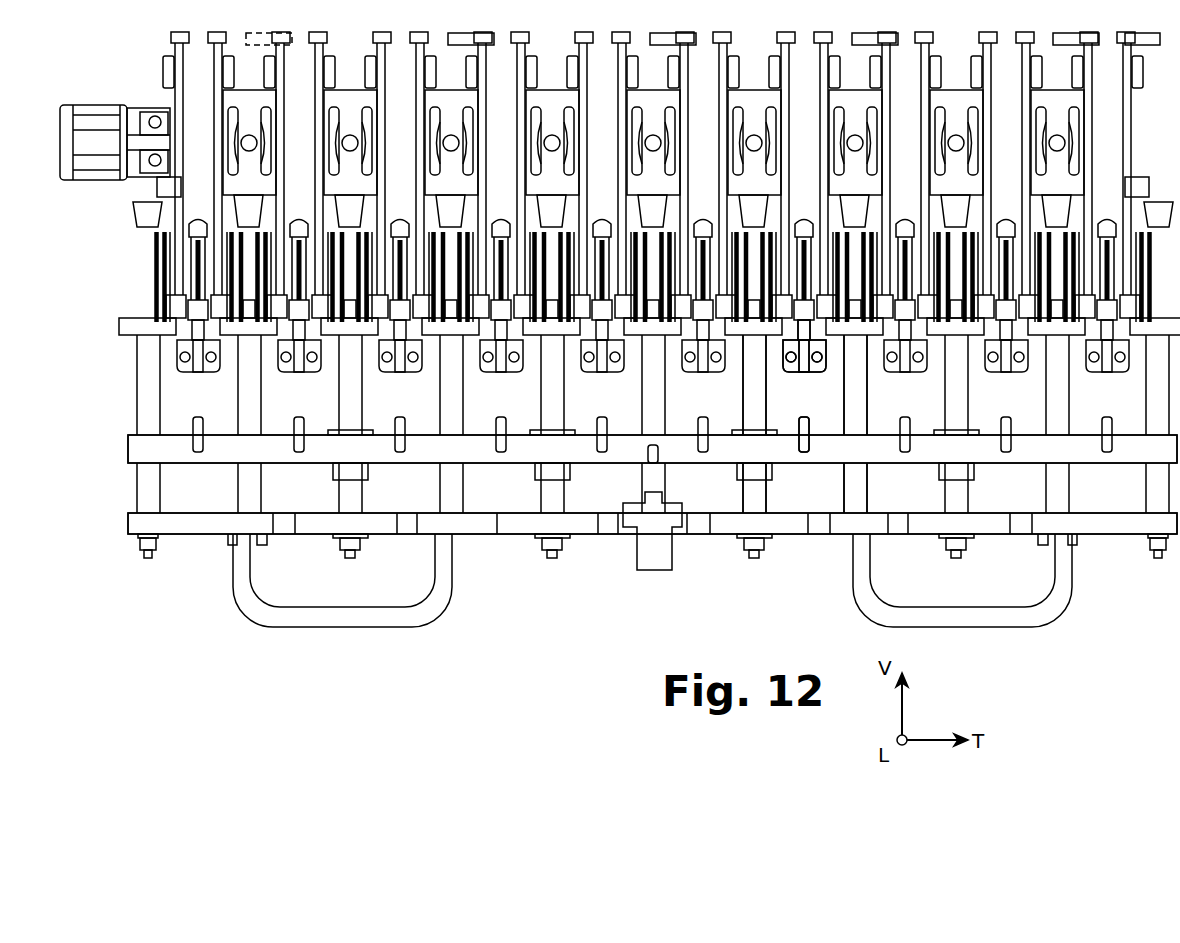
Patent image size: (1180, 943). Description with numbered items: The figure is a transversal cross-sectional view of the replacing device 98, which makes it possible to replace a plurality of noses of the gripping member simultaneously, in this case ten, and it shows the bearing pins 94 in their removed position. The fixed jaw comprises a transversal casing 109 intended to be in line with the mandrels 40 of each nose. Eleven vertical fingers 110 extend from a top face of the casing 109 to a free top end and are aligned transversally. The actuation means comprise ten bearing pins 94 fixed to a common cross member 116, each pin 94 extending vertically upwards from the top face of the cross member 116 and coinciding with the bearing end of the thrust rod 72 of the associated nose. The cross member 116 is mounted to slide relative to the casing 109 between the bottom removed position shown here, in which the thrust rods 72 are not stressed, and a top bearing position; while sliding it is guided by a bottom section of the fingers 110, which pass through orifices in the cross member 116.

The replacing device 98 is at (613, 597).
The transversal casing 109 is at (515, 525).
The cross member 116 is at (720, 450).
The vertical fingers 110 is at (752, 380).
The mandrel 40 is at (778, 368).
The thrust rod 72 is at (806, 374).
The bearing pins 94 is at (813, 424).